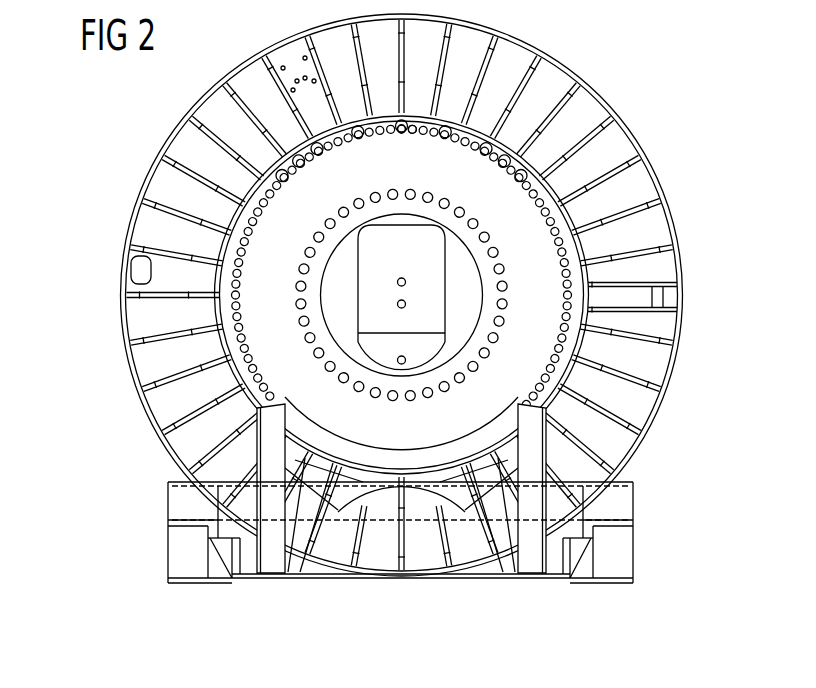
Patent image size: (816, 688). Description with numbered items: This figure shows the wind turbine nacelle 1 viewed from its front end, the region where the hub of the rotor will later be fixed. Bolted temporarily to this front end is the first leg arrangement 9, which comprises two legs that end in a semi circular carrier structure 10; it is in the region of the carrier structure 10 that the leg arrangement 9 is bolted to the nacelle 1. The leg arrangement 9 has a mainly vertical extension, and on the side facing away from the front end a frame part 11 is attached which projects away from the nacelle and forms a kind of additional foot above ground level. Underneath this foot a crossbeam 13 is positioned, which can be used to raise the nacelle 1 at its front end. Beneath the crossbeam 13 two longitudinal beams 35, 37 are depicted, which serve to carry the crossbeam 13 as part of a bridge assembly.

The wind turbine nacelle 1 is at (660, 73).
The first leg arrangement 9 is at (520, 406).
The semi circular carrier structure 10 is at (415, 462).
The frame part 11 is at (272, 455).
The crossbeam 13 is at (625, 503).
The longitudinal beam 35 is at (150, 554).
The longitudinal beam 37 is at (625, 546).